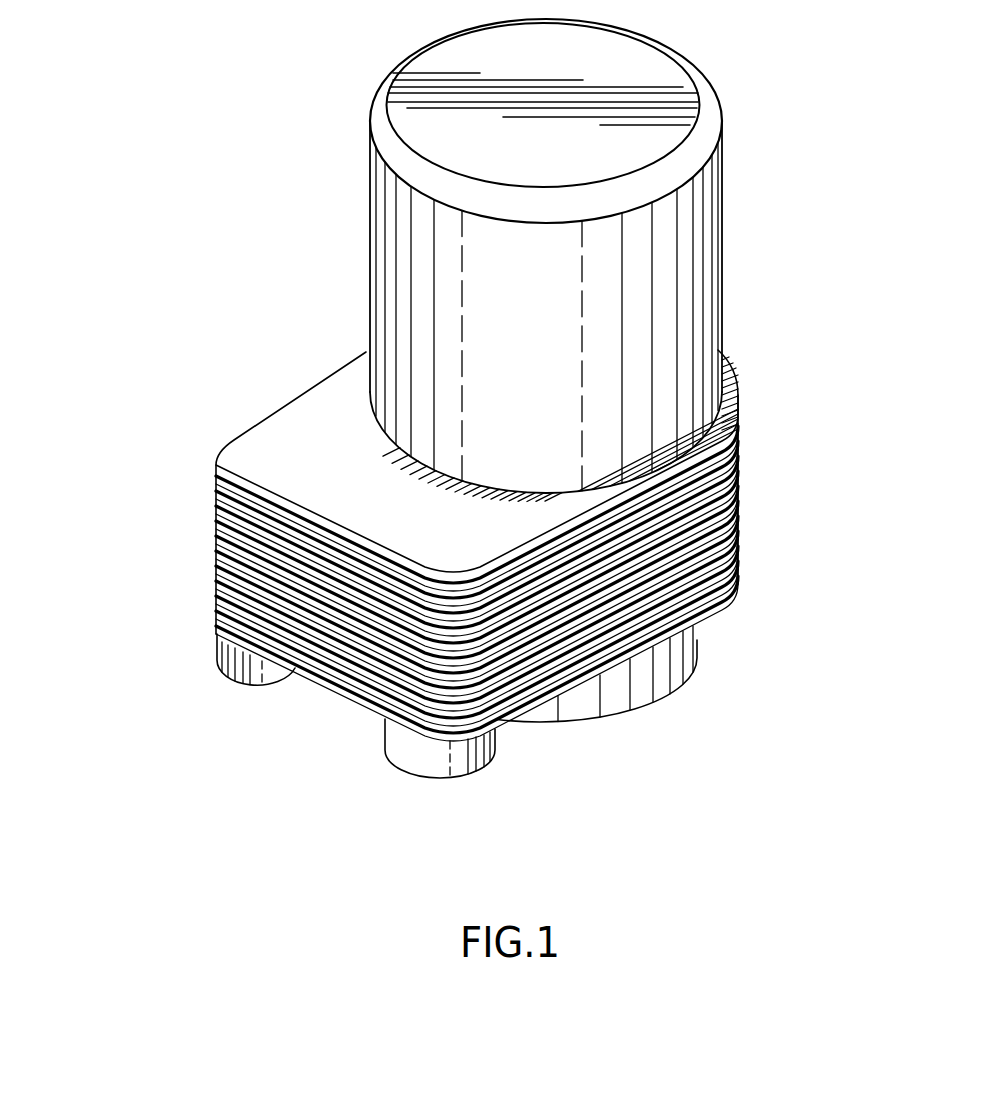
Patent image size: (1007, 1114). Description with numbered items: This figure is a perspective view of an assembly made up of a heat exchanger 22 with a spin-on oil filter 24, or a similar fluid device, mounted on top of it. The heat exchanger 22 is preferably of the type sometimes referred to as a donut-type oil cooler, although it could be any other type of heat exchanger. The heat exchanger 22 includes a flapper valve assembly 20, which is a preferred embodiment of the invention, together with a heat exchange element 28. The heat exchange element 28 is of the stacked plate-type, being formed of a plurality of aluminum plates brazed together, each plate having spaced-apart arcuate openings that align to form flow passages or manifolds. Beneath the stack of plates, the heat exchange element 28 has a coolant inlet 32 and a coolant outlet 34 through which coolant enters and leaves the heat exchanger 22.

The flapper valve assembly 20 is at (277, 460).
The heat exchanger 22 is at (439, 619).
The spin-on oil filter 24 is at (733, 168).
The heat exchange element 28 is at (740, 528).
The coolant inlet 32 is at (250, 702).
The coolant outlet 34 is at (432, 788).